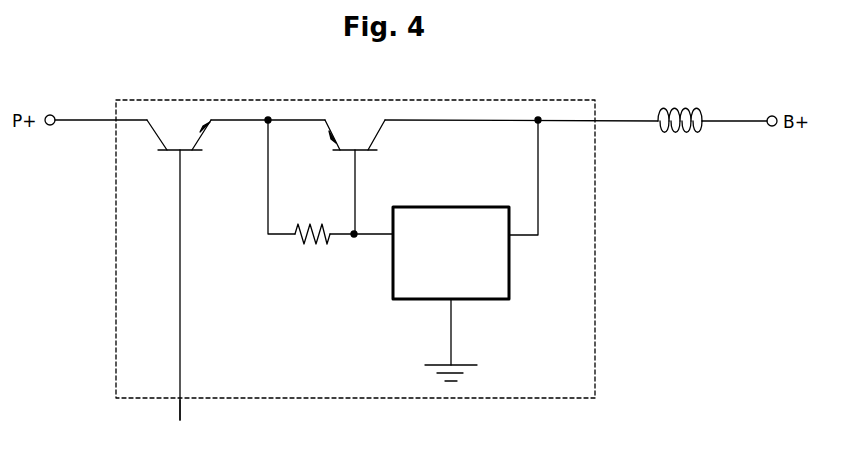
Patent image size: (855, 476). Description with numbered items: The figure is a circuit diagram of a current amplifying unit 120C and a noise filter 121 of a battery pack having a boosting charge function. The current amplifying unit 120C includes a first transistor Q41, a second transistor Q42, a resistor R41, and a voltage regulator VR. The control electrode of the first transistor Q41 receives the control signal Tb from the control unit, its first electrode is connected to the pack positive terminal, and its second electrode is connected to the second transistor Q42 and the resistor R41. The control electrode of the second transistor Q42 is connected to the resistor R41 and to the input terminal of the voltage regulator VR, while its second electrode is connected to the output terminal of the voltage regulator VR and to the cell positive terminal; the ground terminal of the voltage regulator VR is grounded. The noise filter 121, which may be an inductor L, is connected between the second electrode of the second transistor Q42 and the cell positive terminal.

The current amplifying unit 120C is at (355, 100).
The noise filter 121 is at (710, 121).
The first transistor Q41 is at (191, 270).
The second transistor Q42 is at (368, 177).
The resistor R41 is at (312, 250).
The voltage regulator VR is at (450, 206).
The inductor L is at (677, 135).
The control signal Tb is at (178, 425).